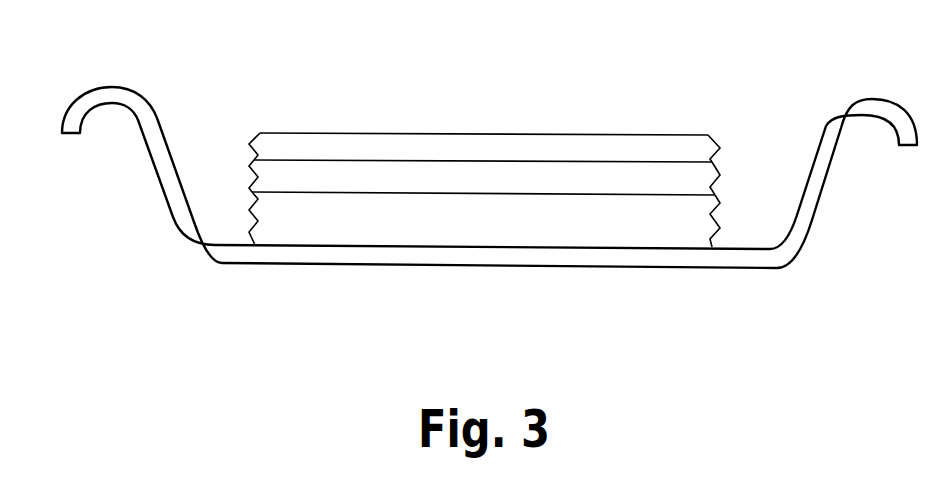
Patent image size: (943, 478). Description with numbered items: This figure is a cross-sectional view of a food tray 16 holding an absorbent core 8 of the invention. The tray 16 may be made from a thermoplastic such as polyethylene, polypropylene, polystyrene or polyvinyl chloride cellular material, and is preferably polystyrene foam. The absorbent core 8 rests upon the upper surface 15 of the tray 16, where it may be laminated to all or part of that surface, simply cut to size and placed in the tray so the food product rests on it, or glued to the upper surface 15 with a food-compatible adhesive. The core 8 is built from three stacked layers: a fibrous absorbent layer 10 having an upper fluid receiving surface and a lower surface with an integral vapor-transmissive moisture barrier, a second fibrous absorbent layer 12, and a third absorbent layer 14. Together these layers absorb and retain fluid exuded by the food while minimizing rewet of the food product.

The absorbent core 8 is at (489, 180).
The fibrous absorbent layer 10 is at (623, 226).
The second fibrous absorbent layer 12 is at (594, 182).
The third absorbent layer 14 is at (542, 148).
The upper surface of the tray 15 is at (737, 247).
The food tray 16 is at (190, 268).